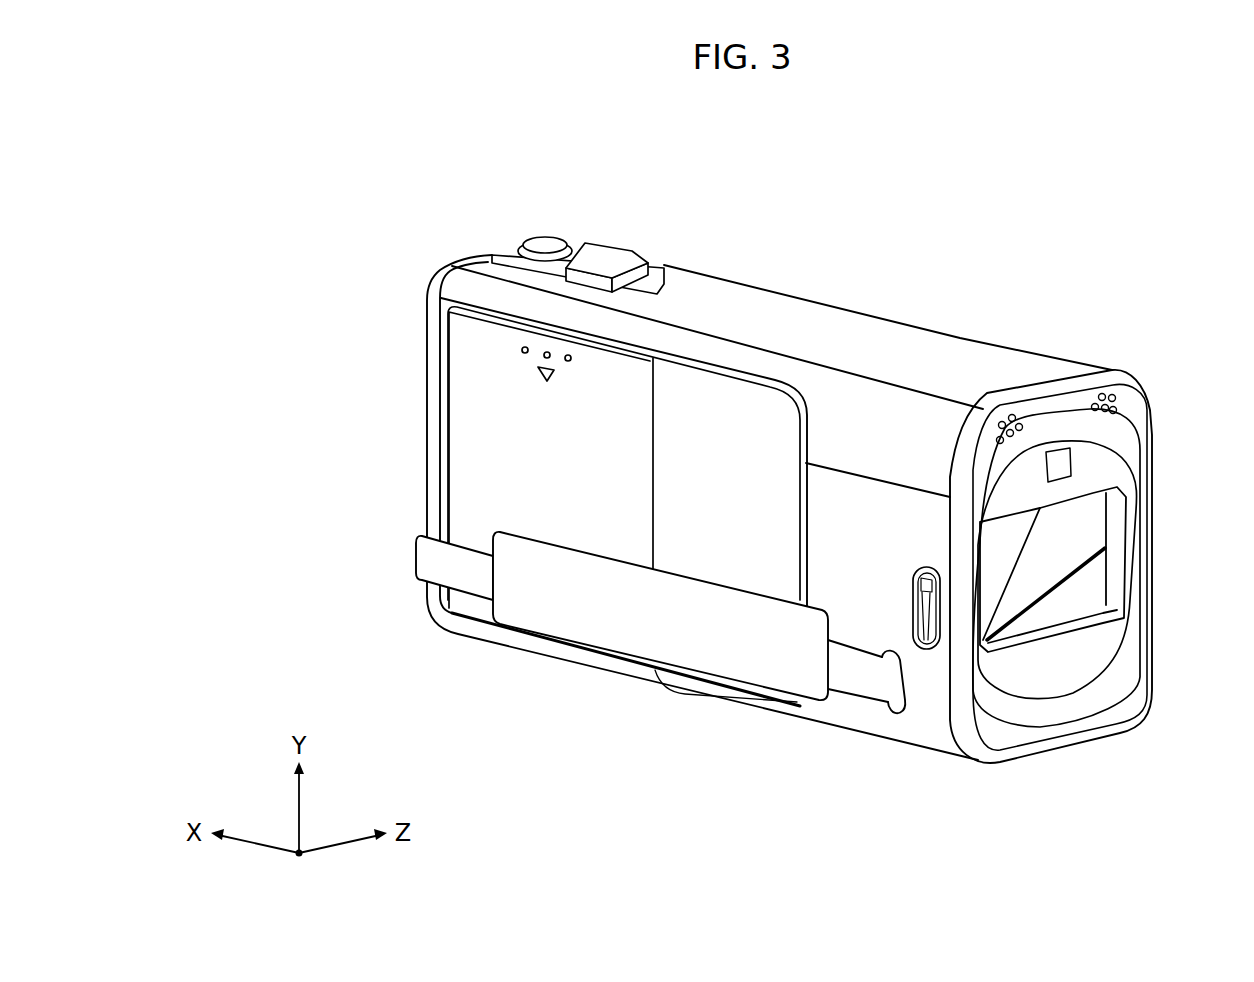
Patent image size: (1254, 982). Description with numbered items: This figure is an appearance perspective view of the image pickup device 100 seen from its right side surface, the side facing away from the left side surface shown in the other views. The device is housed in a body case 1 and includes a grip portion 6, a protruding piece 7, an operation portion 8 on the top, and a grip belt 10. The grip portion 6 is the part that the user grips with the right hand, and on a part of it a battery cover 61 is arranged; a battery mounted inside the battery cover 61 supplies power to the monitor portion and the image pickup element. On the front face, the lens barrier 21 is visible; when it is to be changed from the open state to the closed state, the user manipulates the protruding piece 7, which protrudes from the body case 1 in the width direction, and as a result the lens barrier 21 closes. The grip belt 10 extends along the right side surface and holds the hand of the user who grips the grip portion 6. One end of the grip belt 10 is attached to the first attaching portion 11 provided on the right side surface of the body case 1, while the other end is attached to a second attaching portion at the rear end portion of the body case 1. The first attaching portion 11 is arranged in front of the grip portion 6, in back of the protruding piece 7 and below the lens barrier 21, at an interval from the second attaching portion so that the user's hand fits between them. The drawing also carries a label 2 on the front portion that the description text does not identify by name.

The image pickup device 100 is at (1103, 279).
The body case 1 is at (928, 345).
The front cover 2 is at (1130, 407).
The lens barrier 21 is at (1090, 593).
The grip portion 6 is at (742, 416).
The battery cover 61 is at (474, 460).
The protruding piece 7 is at (925, 653).
The operation portion 8 is at (603, 229).
The grip belt 10 is at (598, 618).
The first attaching portion 11 is at (895, 712).